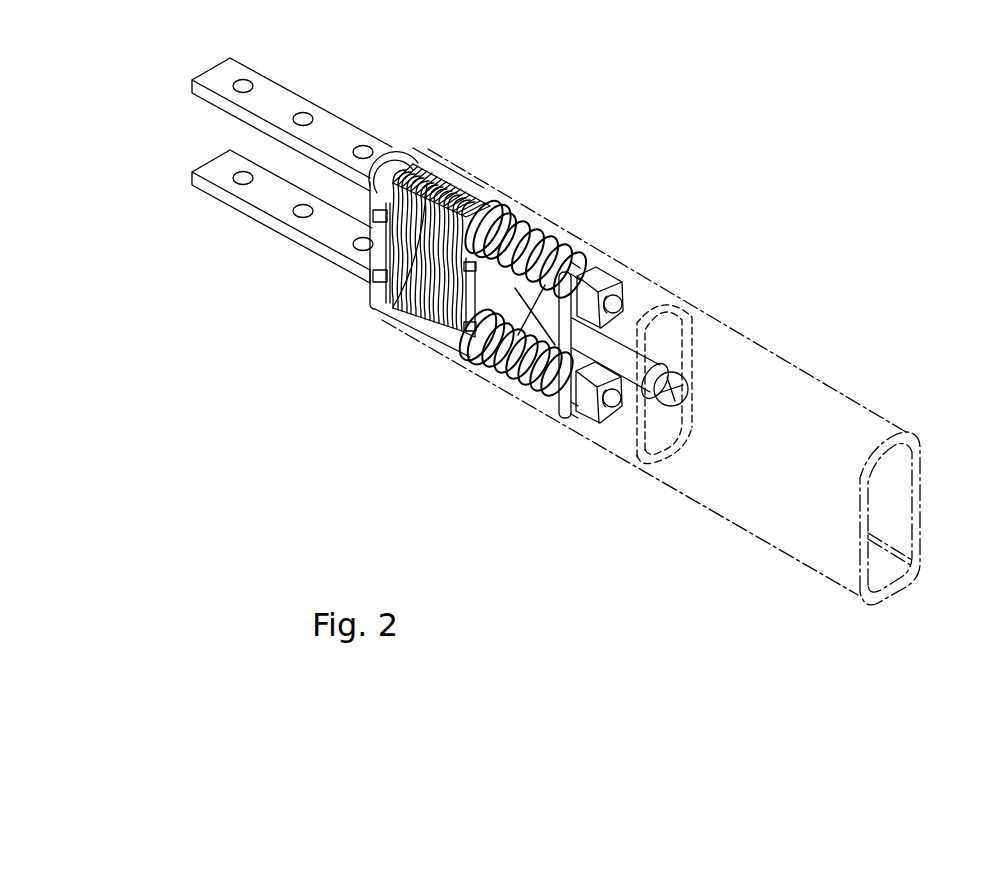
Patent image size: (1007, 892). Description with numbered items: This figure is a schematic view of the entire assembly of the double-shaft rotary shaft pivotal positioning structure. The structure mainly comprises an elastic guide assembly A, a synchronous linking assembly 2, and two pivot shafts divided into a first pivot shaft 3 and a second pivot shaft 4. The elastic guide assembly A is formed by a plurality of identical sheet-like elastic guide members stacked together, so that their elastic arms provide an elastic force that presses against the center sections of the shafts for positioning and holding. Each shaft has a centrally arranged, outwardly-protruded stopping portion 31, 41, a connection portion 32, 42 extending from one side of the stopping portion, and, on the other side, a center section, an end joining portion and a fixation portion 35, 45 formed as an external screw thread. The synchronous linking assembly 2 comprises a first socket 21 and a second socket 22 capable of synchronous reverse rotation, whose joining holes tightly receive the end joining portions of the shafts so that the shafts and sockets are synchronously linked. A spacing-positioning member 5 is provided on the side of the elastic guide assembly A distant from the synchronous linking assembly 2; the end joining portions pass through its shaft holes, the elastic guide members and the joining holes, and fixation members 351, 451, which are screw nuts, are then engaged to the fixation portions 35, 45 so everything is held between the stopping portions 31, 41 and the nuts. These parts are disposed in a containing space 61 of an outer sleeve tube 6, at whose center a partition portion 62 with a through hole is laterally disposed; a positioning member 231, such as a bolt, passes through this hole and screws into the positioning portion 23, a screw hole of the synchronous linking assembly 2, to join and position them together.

The synchronous linking assembly 2 is at (550, 217).
The first socket 21 is at (583, 264).
The second socket 22 is at (573, 414).
The positioning portion 23 is at (672, 368).
The positioning member 231 is at (682, 386).
The first pivot shaft 3 is at (408, 140).
The stopping portion 31 is at (388, 154).
The connection portion 32 is at (282, 95).
The fixation portion 35 is at (617, 283).
The fixation member 351 is at (612, 286).
The second pivot shaft 4 is at (370, 297).
The stopping portion 41 is at (370, 252).
The connection portion 42 is at (261, 194).
The fixation portion 45 is at (614, 414).
The fixation member 451 is at (588, 418).
The spacing-positioning member 5 is at (415, 153).
The outer sleeve tube 6 is at (755, 531).
The containing space 61 is at (895, 462).
The partition portion 62 is at (657, 450).
The elastic guide assembly A is at (483, 191).